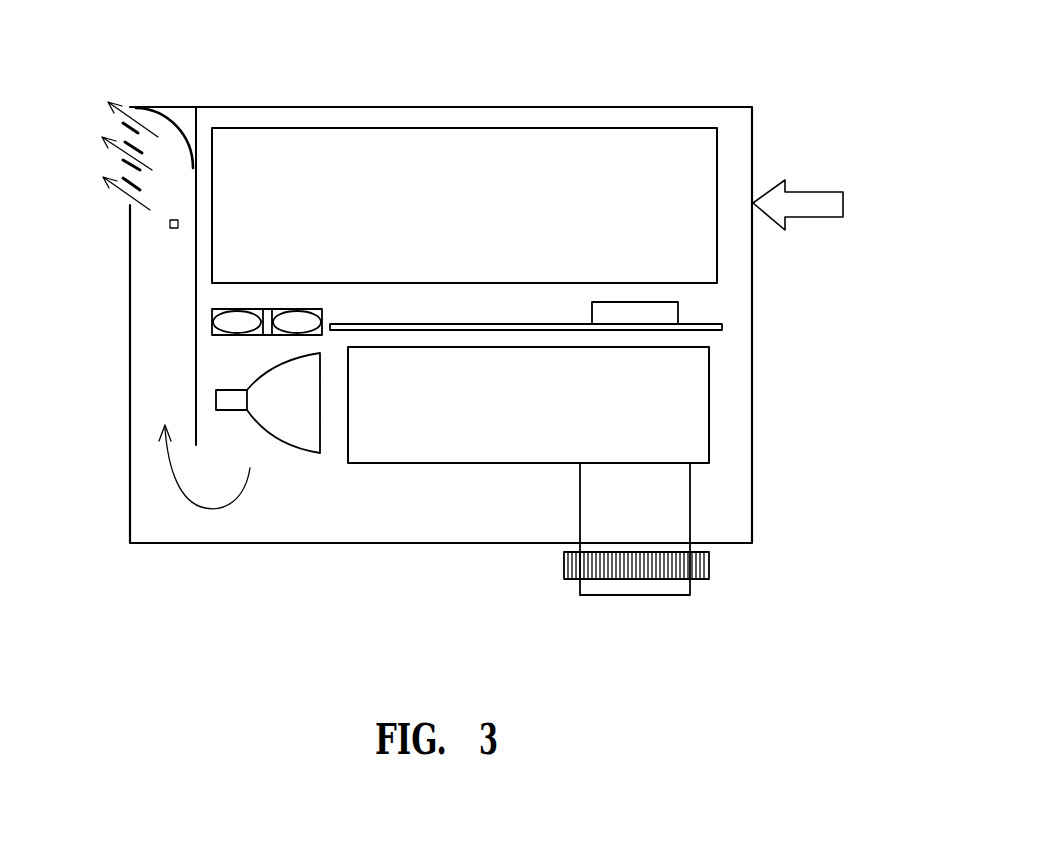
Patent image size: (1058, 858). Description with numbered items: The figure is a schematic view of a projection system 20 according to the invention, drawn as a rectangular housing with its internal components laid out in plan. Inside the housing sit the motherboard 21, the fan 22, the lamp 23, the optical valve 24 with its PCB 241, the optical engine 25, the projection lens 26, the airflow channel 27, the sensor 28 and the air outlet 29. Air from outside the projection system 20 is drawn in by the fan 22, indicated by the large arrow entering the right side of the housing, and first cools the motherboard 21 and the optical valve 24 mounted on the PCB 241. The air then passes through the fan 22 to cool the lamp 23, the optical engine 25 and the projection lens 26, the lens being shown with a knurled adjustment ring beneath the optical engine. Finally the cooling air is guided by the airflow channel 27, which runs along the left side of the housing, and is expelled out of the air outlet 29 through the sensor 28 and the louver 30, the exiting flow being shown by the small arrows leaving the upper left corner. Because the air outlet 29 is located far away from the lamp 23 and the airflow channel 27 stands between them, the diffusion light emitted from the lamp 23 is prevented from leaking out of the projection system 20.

The projection system 20 is at (776, 97).
The motherboard 21 is at (650, 150).
The fan 22 is at (212, 320).
The lamp 23 is at (263, 425).
The optical valve 24 is at (668, 312).
The PCB 241 is at (720, 330).
The optical engine 25 is at (692, 408).
The projection lens 26 is at (653, 573).
The airflow channel 27 is at (196, 208).
The sensor 28 is at (170, 228).
The air outlet 29 is at (131, 108).
The louver 30 is at (118, 128).